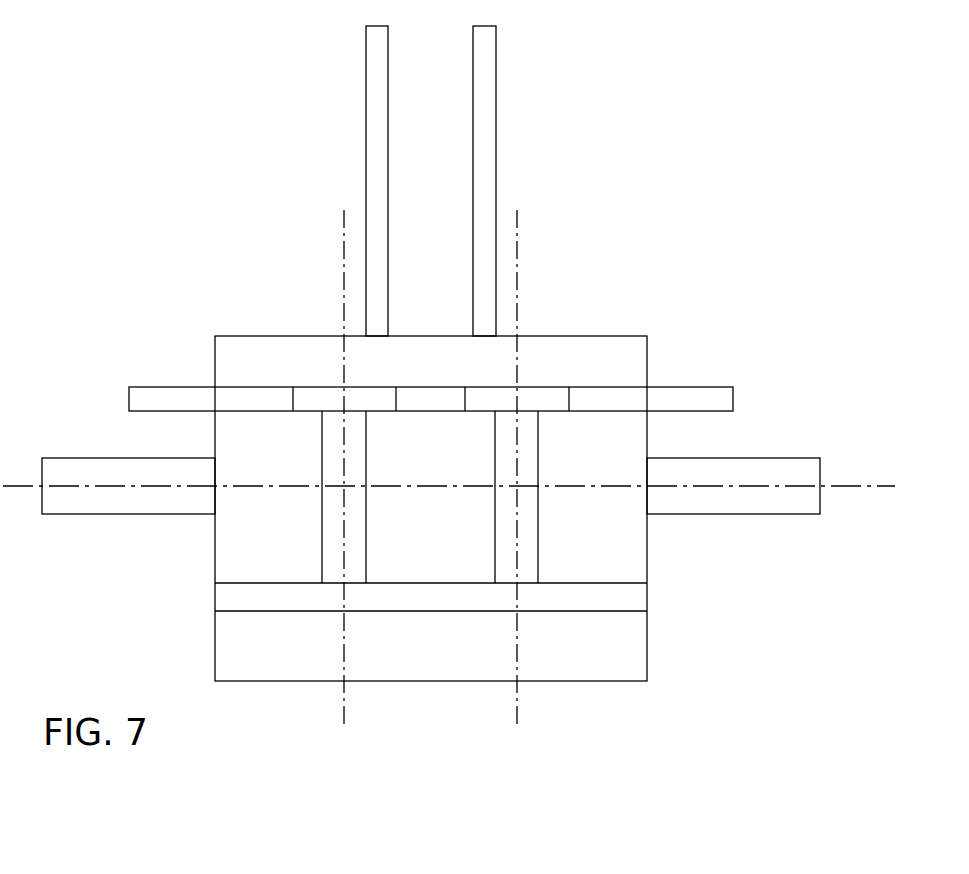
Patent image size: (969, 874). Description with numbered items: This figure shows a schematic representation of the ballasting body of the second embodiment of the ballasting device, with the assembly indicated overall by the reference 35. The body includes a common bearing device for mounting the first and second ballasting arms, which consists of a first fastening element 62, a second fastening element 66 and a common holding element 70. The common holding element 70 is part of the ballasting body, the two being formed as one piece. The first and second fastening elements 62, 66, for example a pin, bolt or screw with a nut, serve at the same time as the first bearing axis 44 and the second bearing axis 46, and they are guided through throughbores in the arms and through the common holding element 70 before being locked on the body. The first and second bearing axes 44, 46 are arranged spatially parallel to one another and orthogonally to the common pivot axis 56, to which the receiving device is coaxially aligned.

The roller assembly 35 is at (222, 272).
The first bearing axis 44 is at (340, 268).
The second bearing axis 46 is at (518, 256).
The common pivot axis 56 is at (852, 484).
The first fastening element 62 is at (332, 553).
The second fastening element 66 is at (527, 547).
The common holding element 70 is at (597, 373).